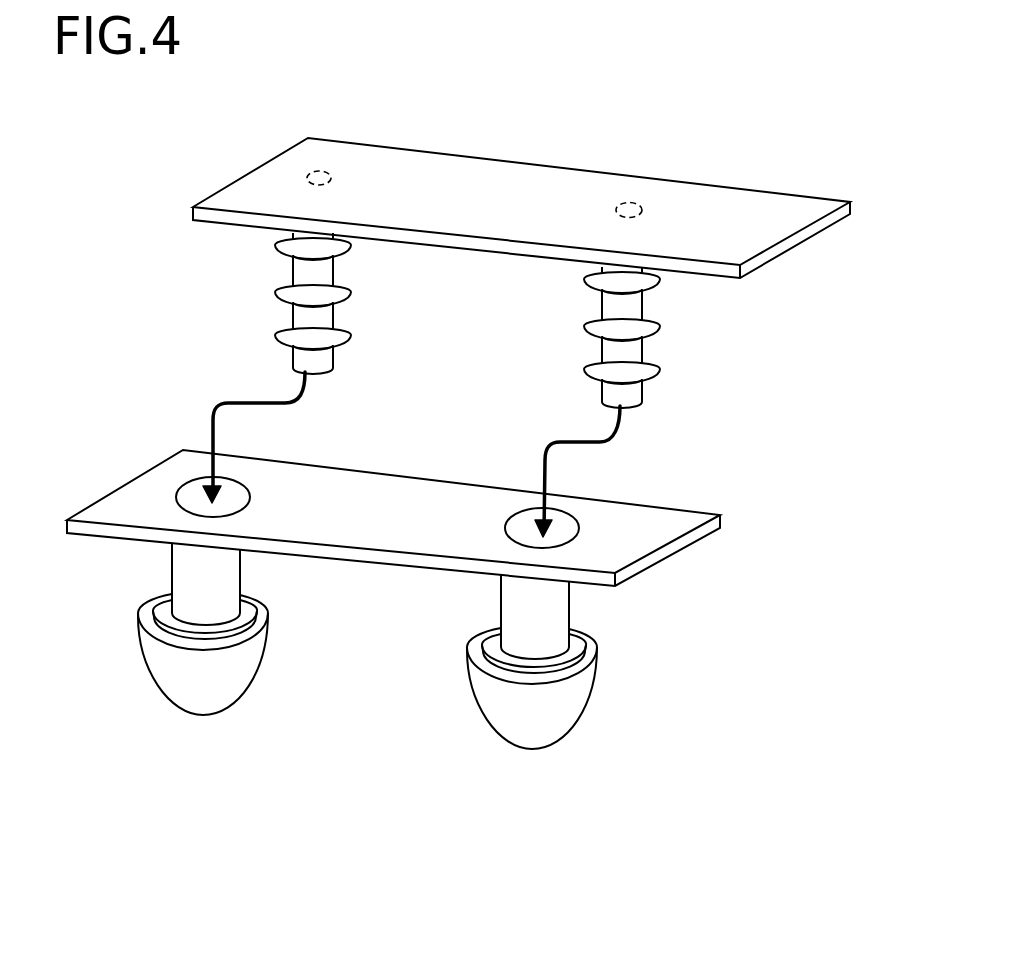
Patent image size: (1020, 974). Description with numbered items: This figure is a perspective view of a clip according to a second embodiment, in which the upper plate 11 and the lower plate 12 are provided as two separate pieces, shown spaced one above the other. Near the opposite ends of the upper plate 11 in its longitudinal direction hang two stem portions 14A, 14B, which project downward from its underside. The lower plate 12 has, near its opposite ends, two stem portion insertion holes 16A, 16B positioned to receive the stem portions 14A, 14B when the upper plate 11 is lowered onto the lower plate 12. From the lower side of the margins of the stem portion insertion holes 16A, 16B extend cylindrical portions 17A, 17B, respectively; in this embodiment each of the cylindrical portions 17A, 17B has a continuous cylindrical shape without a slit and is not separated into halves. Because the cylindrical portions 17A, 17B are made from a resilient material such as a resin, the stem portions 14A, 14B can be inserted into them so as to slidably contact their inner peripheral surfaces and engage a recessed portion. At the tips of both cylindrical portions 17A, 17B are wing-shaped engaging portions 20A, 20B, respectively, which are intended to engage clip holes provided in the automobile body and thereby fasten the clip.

The upper plate 11 is at (745, 187).
The lower plate 12 is at (653, 537).
The stem portion 14A is at (638, 270).
The stem portion 14B is at (285, 236).
The stem portion insertion hole 16A is at (570, 523).
The stem portion insertion hole 16B is at (195, 485).
The cylindrical portion 17A is at (568, 607).
The cylindrical portion 17B is at (172, 567).
The wing-shaped engaging portion 20A is at (495, 708).
The wing-shaped engaging portion 20B is at (245, 680).